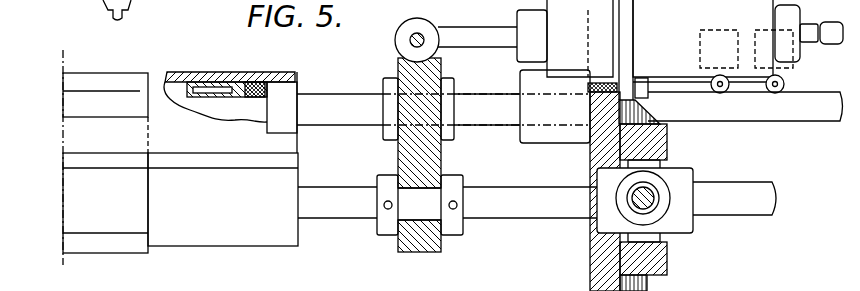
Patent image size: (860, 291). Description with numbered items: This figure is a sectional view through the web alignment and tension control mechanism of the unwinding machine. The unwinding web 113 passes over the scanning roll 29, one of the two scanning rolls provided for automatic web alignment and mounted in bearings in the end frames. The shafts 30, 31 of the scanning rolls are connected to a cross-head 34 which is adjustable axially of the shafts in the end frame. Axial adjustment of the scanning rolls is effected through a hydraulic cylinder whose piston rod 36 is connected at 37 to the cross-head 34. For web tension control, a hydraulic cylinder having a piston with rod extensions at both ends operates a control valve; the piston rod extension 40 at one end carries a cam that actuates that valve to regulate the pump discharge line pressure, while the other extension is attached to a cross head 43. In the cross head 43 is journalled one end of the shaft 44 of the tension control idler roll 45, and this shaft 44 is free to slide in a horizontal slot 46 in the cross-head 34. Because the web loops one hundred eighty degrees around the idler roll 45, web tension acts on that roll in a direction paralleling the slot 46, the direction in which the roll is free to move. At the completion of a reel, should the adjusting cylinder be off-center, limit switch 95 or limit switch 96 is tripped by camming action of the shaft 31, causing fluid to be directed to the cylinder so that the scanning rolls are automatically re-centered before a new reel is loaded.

The scanning roll 29 is at (177, 73).
The shaft 30 is at (149, 10).
The shaft 31 is at (773, 118).
The cross-head 34 is at (448, 154).
The piston rod 36 is at (471, 33).
The connection 37 is at (398, 42).
The piston rod extension 40 is at (655, 190).
The cross head 43 is at (658, 245).
The shaft 44 is at (548, 212).
The tension control idler roll 45 is at (240, 243).
The horizontal slot 46 is at (402, 221).
The limit switch 95 is at (790, 62).
The limit switch 96 is at (724, 10).
The unwinding web 113 is at (82, 117).